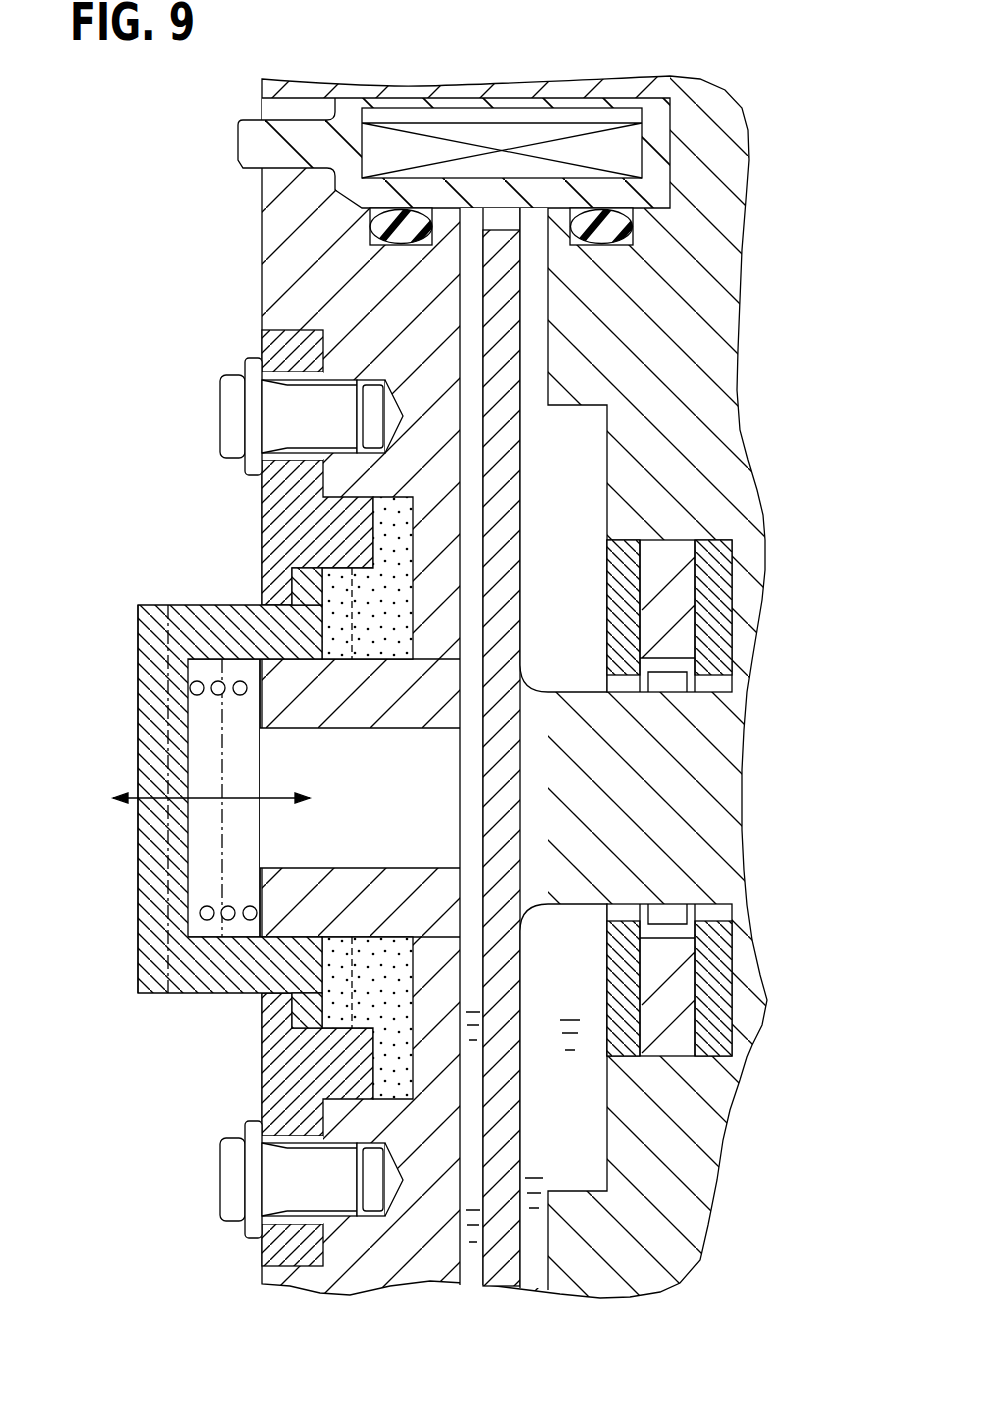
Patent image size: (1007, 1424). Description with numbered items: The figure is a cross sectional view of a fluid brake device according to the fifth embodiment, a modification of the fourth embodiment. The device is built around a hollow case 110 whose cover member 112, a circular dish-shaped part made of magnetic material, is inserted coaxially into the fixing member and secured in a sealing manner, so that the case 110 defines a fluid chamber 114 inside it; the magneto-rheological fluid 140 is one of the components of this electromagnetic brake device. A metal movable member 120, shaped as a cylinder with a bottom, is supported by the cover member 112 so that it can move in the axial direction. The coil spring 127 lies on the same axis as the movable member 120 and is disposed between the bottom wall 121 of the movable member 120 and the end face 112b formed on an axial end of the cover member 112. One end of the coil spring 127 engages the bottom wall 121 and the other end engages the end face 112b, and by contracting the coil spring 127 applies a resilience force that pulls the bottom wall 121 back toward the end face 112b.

The case 110 is at (430, 693).
The cover member 112 is at (283, 258).
The end face 112b is at (258, 722).
The fluid chamber 114 is at (503, 218).
The movable member 120 is at (194, 798).
The bottom wall 121 is at (156, 719).
The coil spring 127 is at (138, 640).
The magneto-rheological fluid 140 is at (470, 1255).